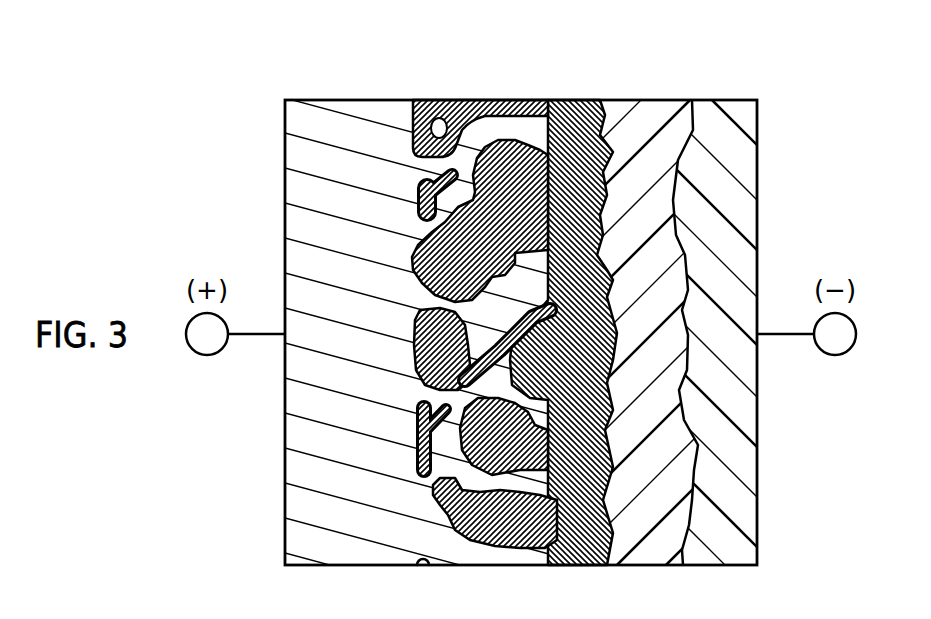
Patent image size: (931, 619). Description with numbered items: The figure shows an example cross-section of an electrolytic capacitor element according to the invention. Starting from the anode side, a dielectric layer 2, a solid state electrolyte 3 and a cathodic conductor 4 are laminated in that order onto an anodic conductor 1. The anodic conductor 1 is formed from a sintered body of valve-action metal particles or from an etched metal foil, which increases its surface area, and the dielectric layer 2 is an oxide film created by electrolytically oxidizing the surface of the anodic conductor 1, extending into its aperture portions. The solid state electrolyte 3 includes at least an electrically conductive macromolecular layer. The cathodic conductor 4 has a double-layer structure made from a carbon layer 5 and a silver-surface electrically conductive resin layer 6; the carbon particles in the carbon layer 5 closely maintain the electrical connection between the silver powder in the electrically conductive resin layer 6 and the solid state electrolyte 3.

The anodic conductor 1 is at (358, 108).
The dielectric layer 2 is at (419, 102).
The solid state electrolyte 3 is at (577, 102).
The cathodic conductor 4 is at (553, 282).
The carbon layer 5 is at (653, 110).
The silver-surface electrically conductive resin layer 6 is at (643, 48).